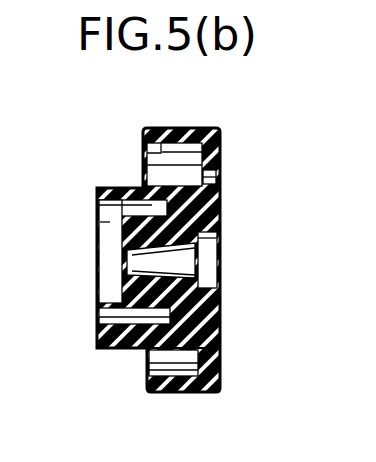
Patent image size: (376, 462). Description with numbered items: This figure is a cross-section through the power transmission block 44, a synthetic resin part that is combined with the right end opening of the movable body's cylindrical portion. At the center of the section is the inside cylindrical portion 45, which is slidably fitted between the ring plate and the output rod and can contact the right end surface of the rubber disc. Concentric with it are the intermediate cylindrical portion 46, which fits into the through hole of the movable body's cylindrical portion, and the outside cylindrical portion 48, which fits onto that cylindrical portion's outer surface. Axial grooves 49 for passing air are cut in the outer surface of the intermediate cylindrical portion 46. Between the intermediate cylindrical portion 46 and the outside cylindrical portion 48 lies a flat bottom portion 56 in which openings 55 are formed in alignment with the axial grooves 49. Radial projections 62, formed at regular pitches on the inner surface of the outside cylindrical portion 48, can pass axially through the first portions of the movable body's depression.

The power transmission block 44 is at (224, 116).
The inside cylindrical portion 45 is at (133, 300).
The intermediate cylindrical portion 46 is at (103, 342).
The outside cylindrical portion 48 is at (146, 378).
The axial grooves 49 is at (127, 190).
The openings 55 is at (206, 176).
The flat bottom portion 56 is at (221, 320).
The radial projections 62 is at (148, 142).